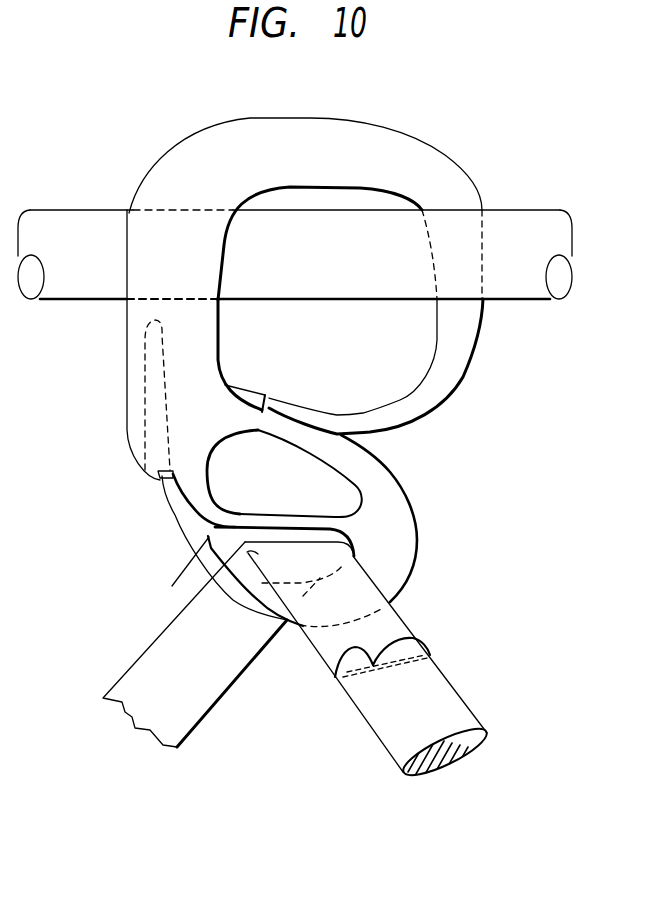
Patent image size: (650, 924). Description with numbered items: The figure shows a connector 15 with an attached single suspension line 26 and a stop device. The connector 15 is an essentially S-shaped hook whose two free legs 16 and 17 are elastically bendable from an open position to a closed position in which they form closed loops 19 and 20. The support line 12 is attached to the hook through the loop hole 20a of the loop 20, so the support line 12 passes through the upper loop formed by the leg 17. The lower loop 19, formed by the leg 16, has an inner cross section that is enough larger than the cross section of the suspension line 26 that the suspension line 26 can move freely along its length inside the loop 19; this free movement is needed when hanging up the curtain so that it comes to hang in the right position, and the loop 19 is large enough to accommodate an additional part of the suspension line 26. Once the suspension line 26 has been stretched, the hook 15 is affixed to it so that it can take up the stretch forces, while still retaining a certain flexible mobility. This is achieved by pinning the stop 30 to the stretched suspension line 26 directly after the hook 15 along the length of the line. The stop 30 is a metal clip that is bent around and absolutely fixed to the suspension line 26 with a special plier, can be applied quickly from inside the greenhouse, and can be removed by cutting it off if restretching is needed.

The support line 12 is at (76, 218).
The connector 15 is at (463, 140).
The free leg 16 is at (170, 507).
The free leg 17 is at (460, 390).
The loop 19 is at (240, 540).
The loop 20 is at (200, 342).
The loop hole 20a is at (321, 198).
The suspension line 26 is at (397, 630).
The stop 30 is at (430, 645).